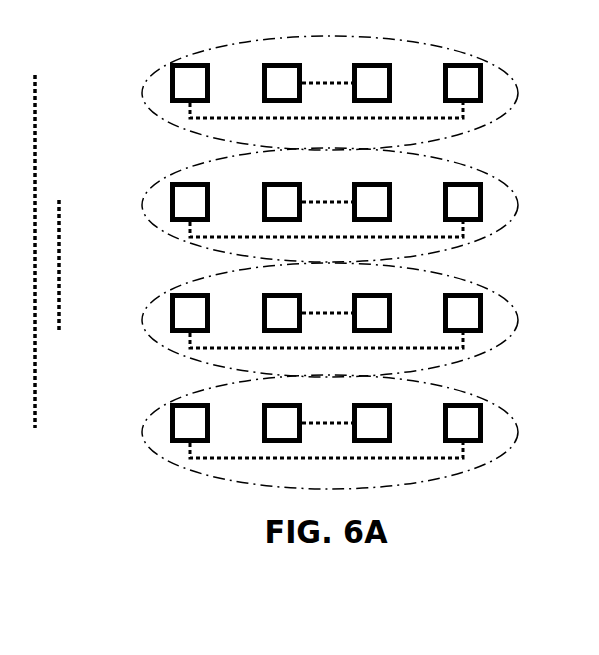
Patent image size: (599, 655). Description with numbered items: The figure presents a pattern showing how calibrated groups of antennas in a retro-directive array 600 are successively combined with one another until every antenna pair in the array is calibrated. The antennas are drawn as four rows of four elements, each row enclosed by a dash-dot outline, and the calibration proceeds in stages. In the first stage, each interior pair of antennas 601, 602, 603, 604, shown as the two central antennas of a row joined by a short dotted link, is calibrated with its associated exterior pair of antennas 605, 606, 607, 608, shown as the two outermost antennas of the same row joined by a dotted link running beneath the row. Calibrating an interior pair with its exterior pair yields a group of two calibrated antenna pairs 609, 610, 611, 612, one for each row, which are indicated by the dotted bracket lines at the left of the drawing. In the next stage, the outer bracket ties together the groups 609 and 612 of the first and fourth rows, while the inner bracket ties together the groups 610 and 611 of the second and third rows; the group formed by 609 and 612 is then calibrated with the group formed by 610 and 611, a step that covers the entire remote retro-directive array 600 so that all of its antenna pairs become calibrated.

The retro-directive array 600 is at (313, 20).
The interior pair of antennas 601 is at (327, 75).
The interior pair of antennas 602 is at (327, 194).
The interior pair of antennas 603 is at (327, 305).
The interior pair of antennas 604 is at (327, 415).
The exterior pair of antennas 605 is at (326, 108).
The exterior pair of antennas 606 is at (326, 227).
The exterior pair of antennas 607 is at (326, 338).
The exterior pair of antennas 608 is at (326, 448).
The group of two calibrated antenna pairs 609 is at (35, 75).
The group of two calibrated antenna pairs 610 is at (59, 200).
The group of two calibrated antenna pairs 611 is at (59, 332).
The group of two calibrated antenna pairs 612 is at (35, 428).